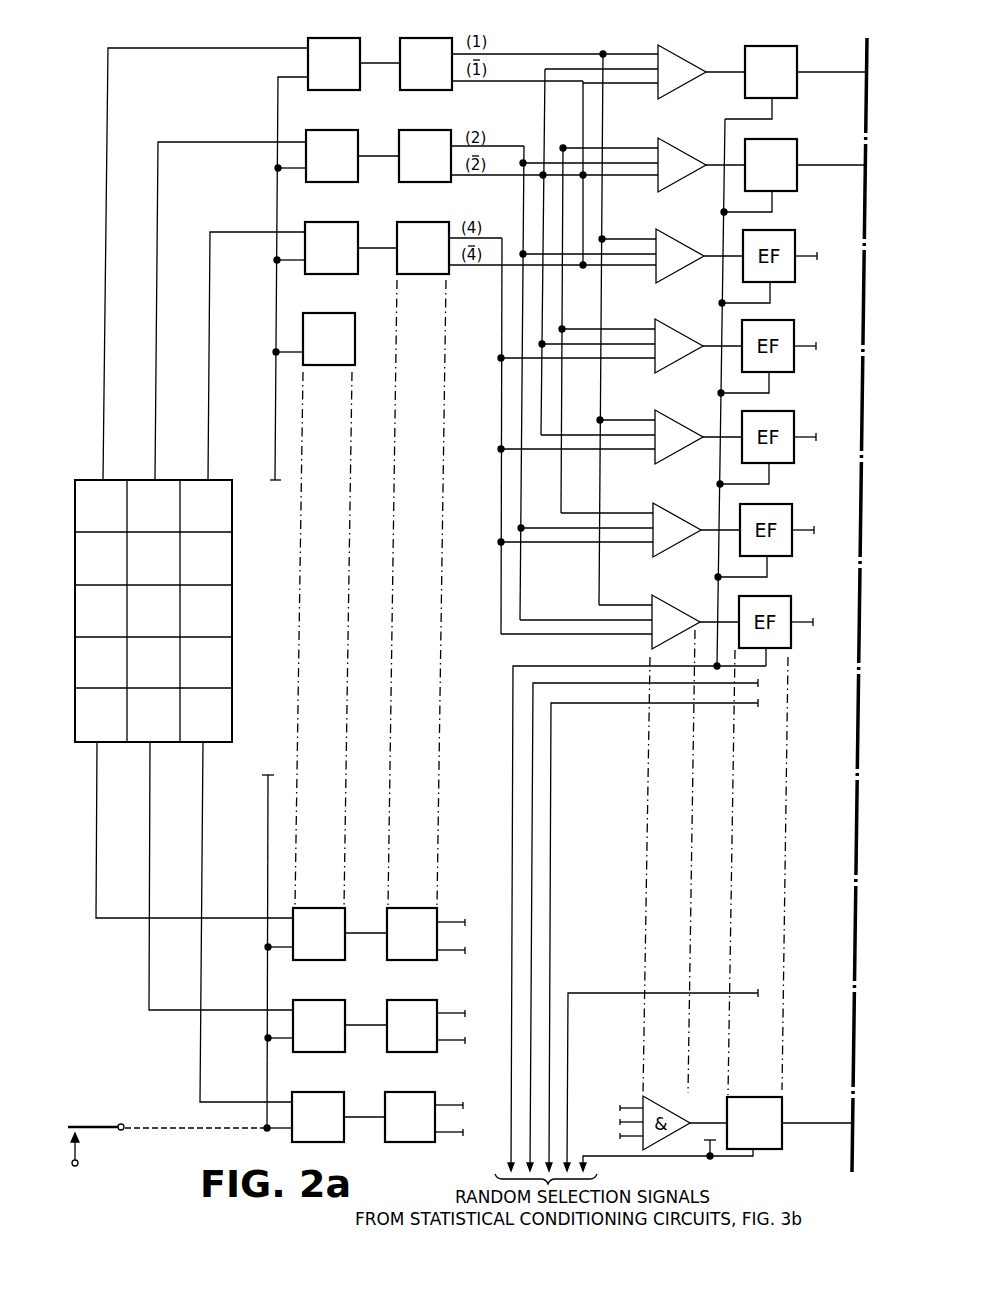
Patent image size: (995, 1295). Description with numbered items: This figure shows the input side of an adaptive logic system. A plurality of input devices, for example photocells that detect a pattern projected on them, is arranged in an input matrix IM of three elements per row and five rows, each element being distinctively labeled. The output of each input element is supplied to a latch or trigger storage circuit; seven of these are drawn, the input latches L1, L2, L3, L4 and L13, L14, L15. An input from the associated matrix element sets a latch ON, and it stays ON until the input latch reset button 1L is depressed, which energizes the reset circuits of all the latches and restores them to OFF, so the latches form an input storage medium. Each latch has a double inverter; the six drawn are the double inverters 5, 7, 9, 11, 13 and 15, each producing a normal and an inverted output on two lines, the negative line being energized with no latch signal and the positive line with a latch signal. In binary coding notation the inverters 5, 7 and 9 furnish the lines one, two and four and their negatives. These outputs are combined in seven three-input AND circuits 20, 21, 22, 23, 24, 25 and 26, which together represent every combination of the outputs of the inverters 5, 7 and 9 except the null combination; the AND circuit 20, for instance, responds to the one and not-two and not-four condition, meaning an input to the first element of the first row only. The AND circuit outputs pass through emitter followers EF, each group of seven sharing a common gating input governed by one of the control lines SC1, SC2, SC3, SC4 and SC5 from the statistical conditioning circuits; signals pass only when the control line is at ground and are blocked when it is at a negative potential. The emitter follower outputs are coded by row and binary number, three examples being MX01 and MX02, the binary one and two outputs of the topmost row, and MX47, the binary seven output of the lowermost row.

The double inverter 5 is at (400, 42).
The double inverter 7 is at (399, 133).
The double inverter 9 is at (406, 226).
The double inverter 11 is at (437, 908).
The double inverter 13 is at (437, 1000).
The double inverter 15 is at (432, 1092).
The AND circuit 20 is at (688, 52).
The AND circuit 21 is at (680, 144).
The AND circuit 22 is at (678, 235).
The AND circuit 23 is at (678, 325).
The AND circuit 24 is at (678, 416).
The AND circuit 25 is at (676, 510).
The AND circuit 26 is at (676, 602).
The input latch L1 is at (355, 88).
The input latch L2 is at (353, 180).
The input latch L3 is at (352, 272).
The input latch L4 is at (352, 364).
The input latch L13 is at (345, 908).
The input latch L14 is at (345, 1000).
The input latch L15 is at (344, 1092).
The input matrix IM is at (228, 479).
The emitter follower output MX01 is at (831, 72).
The emitter follower output MX02 is at (827, 162).
The emitter follower output MX47 is at (809, 1125).
The control line SC1 is at (514, 738).
The control line SC2 is at (535, 787).
The control line SC3 is at (551, 852).
The control line SC4 is at (594, 993).
The control line SC5 is at (605, 1156).
The input latch reset button 1L is at (103, 1130).